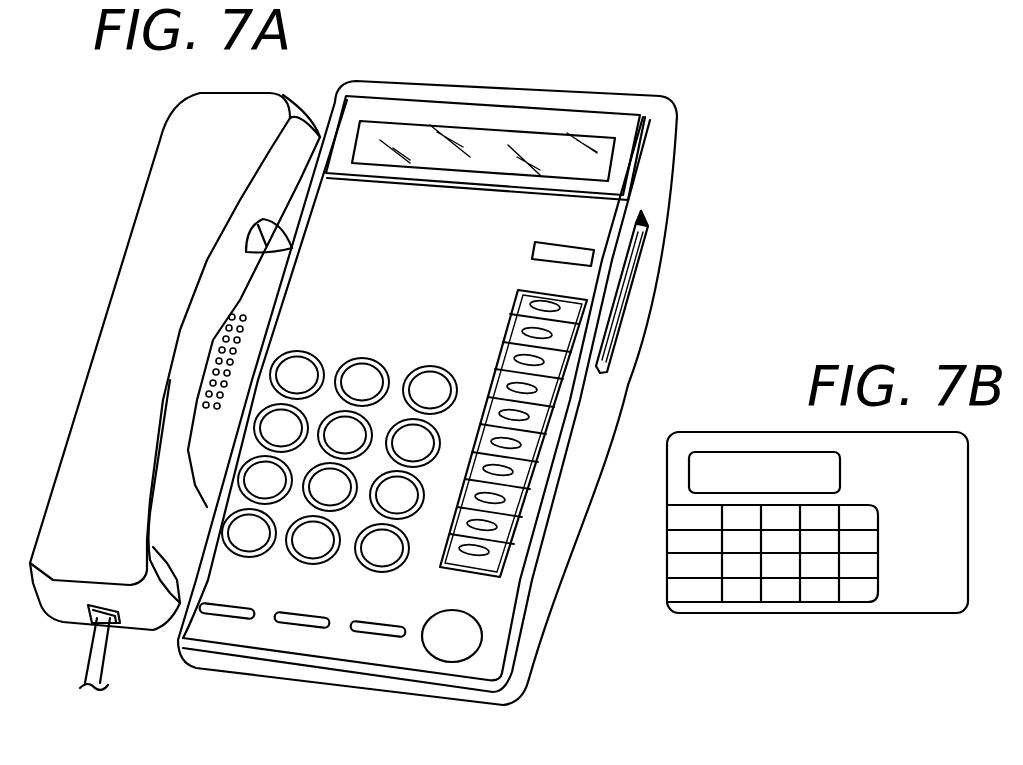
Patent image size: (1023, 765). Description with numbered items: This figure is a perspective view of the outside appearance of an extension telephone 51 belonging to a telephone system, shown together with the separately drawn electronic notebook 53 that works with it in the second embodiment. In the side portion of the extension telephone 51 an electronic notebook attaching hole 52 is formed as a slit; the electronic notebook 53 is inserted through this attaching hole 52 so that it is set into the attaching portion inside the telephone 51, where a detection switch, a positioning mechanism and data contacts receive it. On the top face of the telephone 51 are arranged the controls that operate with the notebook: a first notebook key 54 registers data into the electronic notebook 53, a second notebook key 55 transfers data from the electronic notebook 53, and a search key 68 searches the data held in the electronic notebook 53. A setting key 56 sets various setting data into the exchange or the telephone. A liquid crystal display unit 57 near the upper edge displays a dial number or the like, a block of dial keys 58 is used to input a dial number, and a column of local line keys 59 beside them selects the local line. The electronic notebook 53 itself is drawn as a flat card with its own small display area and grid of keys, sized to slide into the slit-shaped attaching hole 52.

In FIG. 7A, the extension telephone 51 is at (441, 83).
In FIG. 7A, the electronic notebook attaching hole 52 is at (643, 220).
In FIG. 7B, the electronic notebook 53 is at (842, 612).
In FIG. 7A, the first notebook key 54 is at (220, 617).
In FIG. 7A, the second notebook key 55 is at (293, 625).
In FIG. 7A, the setting key 56 is at (372, 634).
In FIG. 7A, the liquid crystal display unit 57 is at (545, 133).
In FIG. 7A, the dial keys 58 is at (443, 349).
In FIG. 7A, the local line keys 59 is at (560, 306).
In FIG. 7A, the search key 68 is at (597, 257).